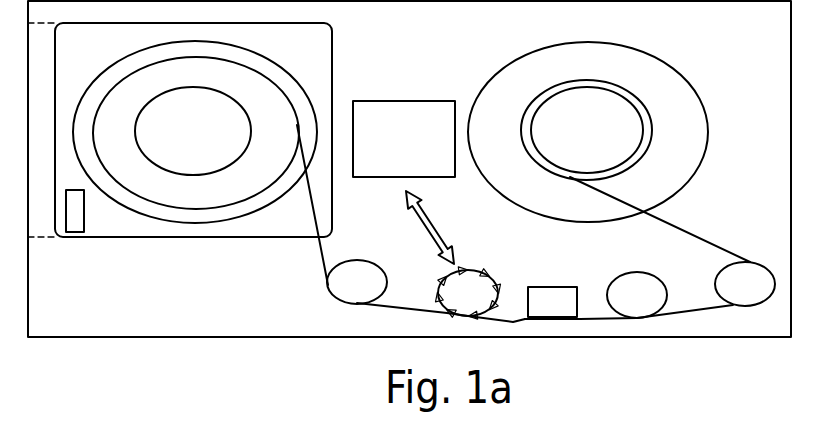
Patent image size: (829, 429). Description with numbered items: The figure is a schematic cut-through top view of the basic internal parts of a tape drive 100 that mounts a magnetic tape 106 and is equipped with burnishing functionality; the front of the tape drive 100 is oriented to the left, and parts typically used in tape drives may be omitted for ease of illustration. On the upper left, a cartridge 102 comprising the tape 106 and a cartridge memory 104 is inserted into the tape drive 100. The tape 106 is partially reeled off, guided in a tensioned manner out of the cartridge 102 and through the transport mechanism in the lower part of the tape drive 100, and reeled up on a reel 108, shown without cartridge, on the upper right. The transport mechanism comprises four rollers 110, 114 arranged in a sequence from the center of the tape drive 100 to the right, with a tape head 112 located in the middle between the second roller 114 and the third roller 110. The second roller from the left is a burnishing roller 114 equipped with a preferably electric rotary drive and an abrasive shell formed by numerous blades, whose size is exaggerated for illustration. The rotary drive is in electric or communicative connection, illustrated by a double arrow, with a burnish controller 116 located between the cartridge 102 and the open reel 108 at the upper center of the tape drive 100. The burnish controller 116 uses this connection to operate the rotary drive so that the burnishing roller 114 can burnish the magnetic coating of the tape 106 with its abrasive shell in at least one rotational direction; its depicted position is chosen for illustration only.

The tape drive 100 is at (385, 33).
The cartridge 102 is at (63, 55).
The cartridge memory 104 is at (78, 218).
The magnetic tape 106 is at (690, 232).
The reel 108 is at (567, 70).
The rollers 110 is at (339, 293).
The tape head 112 is at (570, 313).
The burnishing roller 114 is at (451, 304).
The burnish controller 116 is at (386, 148).